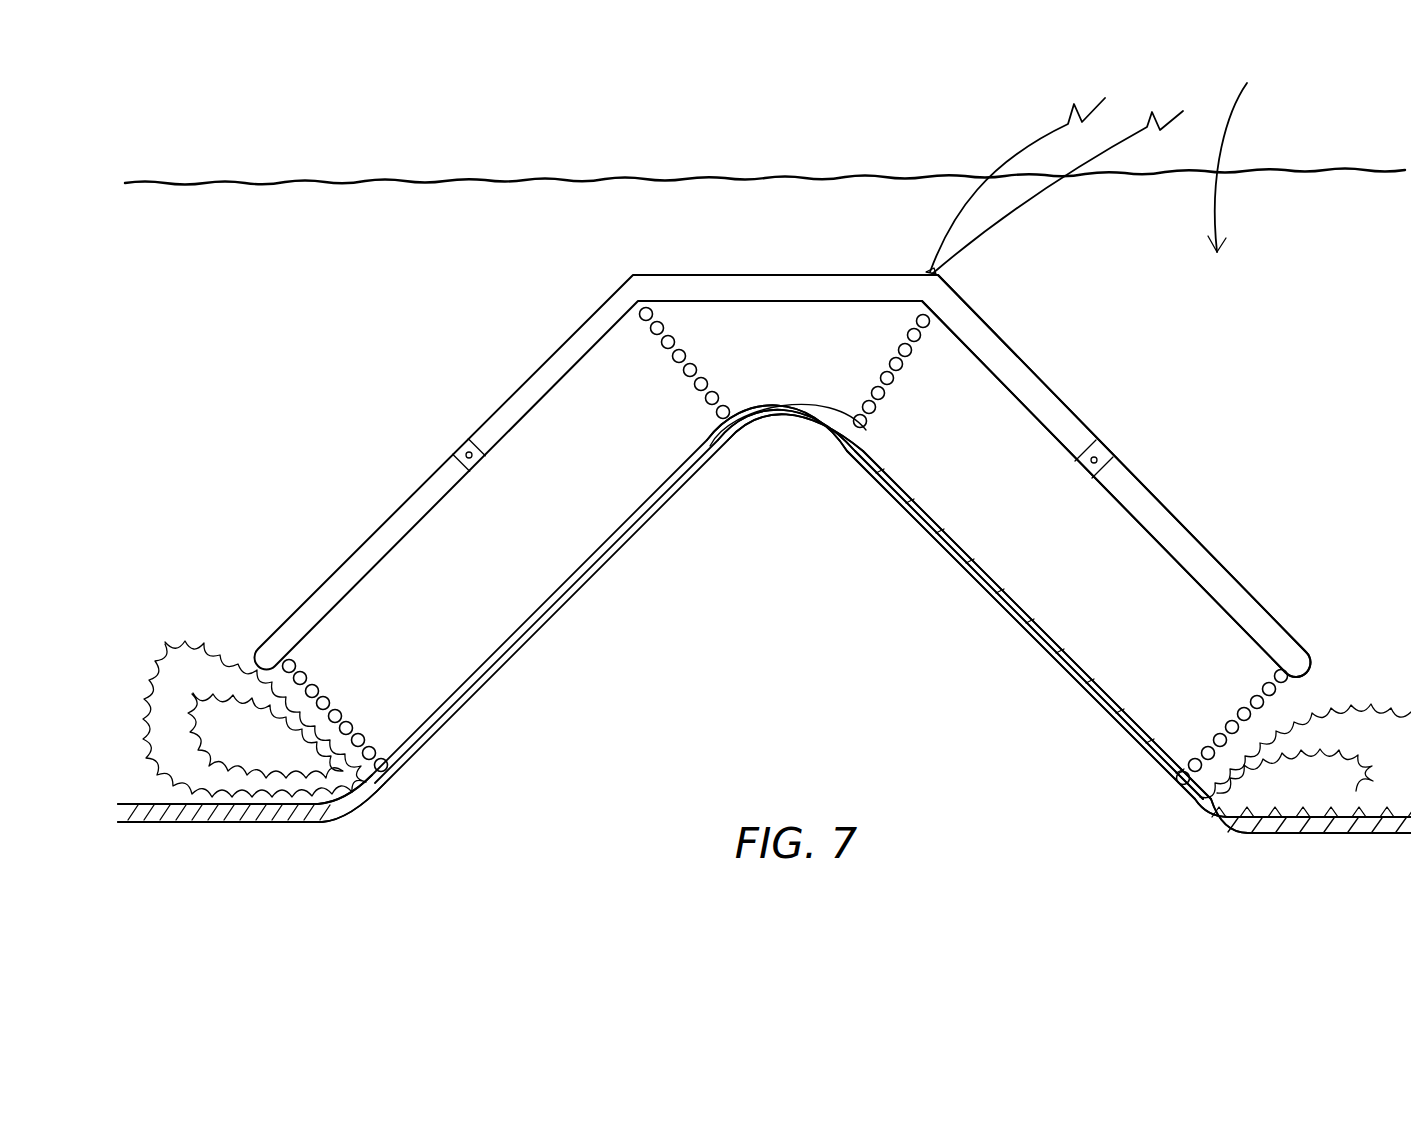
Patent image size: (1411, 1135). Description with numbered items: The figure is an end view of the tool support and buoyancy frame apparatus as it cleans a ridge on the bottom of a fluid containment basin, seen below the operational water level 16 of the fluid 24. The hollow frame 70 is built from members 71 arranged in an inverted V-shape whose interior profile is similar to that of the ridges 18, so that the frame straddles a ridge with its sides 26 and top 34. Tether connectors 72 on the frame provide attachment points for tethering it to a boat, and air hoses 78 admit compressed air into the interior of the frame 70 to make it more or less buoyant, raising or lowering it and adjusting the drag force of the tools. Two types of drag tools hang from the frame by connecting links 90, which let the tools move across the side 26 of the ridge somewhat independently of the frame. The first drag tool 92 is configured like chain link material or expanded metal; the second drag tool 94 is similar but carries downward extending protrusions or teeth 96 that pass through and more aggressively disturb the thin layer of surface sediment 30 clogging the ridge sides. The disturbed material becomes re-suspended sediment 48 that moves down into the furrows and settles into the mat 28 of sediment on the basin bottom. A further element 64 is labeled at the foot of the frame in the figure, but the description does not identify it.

The operational water level 16 is at (403, 182).
The ridges 18 is at (798, 627).
The fluid 24 is at (1248, 149).
The sides of ridges 26 is at (633, 540).
The mat of settled sediment 28 is at (1313, 827).
The thin layer of sediment 30 is at (732, 447).
The top of ridges 34 is at (799, 430).
The re-suspended sediment 48 is at (1360, 707).
The base footing 64 is at (350, 823).
The frame 70 is at (504, 373).
The members 71 is at (1200, 558).
The tether connectors 72 is at (1100, 446).
The air hoses 78 is at (1012, 222).
The connecting links 90 is at (667, 364).
The drag tool 92 is at (573, 577).
The second drag tool 94 is at (997, 583).
The teeth 96 is at (1005, 607).